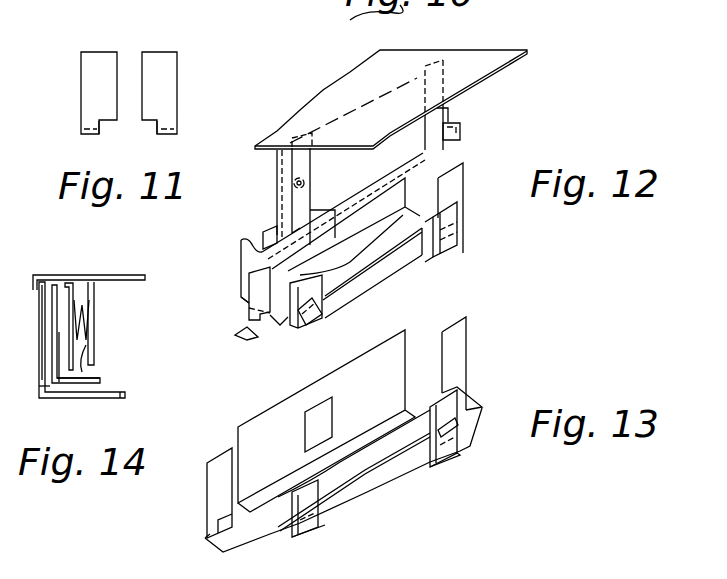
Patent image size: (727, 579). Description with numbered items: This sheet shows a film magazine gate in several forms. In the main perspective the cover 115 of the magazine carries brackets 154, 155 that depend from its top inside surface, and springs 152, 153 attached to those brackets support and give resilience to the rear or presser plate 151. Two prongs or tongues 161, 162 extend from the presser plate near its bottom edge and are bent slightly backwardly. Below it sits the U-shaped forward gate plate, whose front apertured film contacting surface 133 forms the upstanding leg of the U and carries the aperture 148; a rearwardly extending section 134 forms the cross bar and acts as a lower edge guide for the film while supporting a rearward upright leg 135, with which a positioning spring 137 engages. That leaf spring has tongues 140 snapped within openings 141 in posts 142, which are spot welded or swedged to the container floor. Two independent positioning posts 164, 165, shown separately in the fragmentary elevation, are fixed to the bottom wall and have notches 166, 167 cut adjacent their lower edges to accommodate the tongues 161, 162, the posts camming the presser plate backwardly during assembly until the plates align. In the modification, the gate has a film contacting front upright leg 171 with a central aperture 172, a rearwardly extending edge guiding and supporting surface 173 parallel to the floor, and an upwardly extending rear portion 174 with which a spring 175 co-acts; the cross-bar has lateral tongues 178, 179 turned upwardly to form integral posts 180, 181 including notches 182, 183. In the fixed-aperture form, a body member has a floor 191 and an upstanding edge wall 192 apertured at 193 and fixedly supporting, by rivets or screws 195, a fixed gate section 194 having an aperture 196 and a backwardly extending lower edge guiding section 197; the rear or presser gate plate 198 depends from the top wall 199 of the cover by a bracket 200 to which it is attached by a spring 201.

In FIG. 12, the cover 115 is at (391, 99).
In FIG. 12, the film contacting surface 133 is at (241, 251).
In FIG. 12, the rearwardly extending section 134 is at (343, 214).
In FIG. 12, the rearward upright leg 135 is at (265, 327).
In FIG. 12, the positioning spring 137 is at (360, 276).
In FIG. 12, the tongues 140 is at (300, 330).
In FIG. 12, the openings 141 is at (322, 320).
In FIG. 12, the posts 142 is at (318, 328).
In FIG. 12, the aperture 148 is at (326, 224).
In FIG. 12, the presser plate 151 is at (277, 172).
In FIG. 12, the spring 152 is at (305, 181).
In FIG. 12, the spring 153 is at (448, 108).
In FIG. 12, the bracket 154 is at (300, 206).
In FIG. 12, the bracket 155 is at (452, 119).
In FIG. 12, the tongue 161 is at (264, 232).
In FIG. 12, the tongue 162 is at (462, 131).
In FIG. 11, the positioning post 164 is at (85, 52).
In FIG. 12, the positioning post 164 is at (248, 308).
In FIG. 11, the positioning post 165 is at (176, 52).
In FIG. 12, the positioning post 165 is at (472, 208).
In FIG. 11, the notch 166 is at (103, 124).
In FIG. 12, the notch 166 is at (248, 338).
In FIG. 11, the notch 167 is at (157, 124).
In FIG. 12, the notch 167 is at (435, 222).
In FIG. 13, the front upright leg 171 is at (326, 421).
In FIG. 13, the central aperture 172 is at (329, 404).
In FIG. 13, the edge guiding and supporting surface 173 is at (368, 448).
In FIG. 13, the rear portion 174 is at (292, 530).
In FIG. 13, the spring 175 is at (397, 476).
In FIG. 13, the tongue 178 is at (242, 540).
In FIG. 13, the tongue 179 is at (462, 412).
In FIG. 13, the post 180 is at (201, 493).
In FIG. 13, the post 181 is at (458, 335).
In FIG. 13, the notch 182 is at (207, 538).
In FIG. 13, the notch 183 is at (440, 403).
In FIG. 14, the floor 191 is at (125, 397).
In FIG. 14, the edge wall 192 is at (39, 392).
In FIG. 14, the aperture 193 is at (43, 334).
In FIG. 14, the fixed gate section 194 is at (54, 283).
In FIG. 14, the rivets or screws 195 is at (43, 308).
In FIG. 14, the aperture 196 is at (60, 383).
In FIG. 14, the lower edge guiding section 197 is at (100, 380).
In FIG. 14, the presser gate plate 198 is at (70, 283).
In FIG. 14, the top wall 199 is at (122, 277).
In FIG. 14, the bracket 200 is at (94, 303).
In FIG. 14, the spring 201 is at (82, 372).